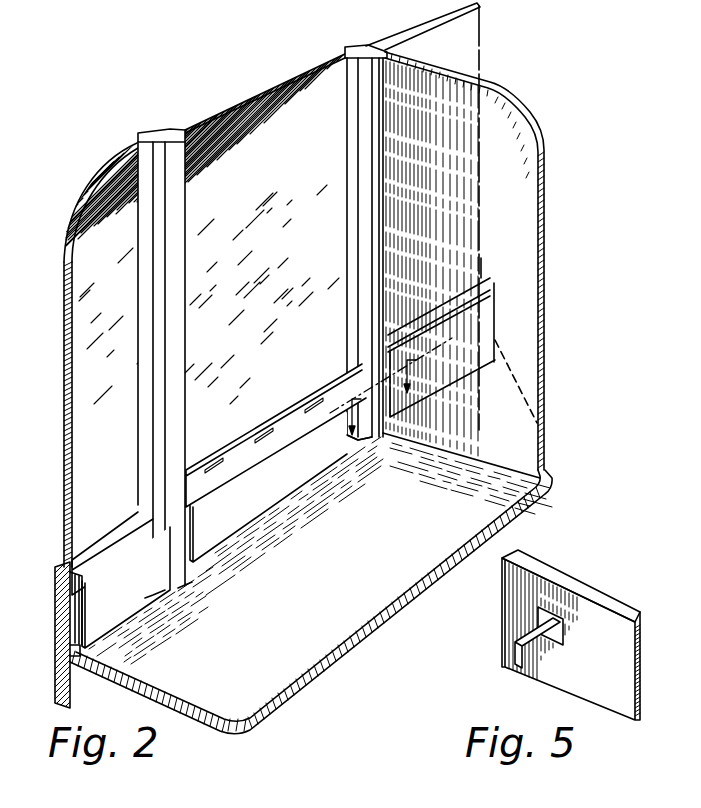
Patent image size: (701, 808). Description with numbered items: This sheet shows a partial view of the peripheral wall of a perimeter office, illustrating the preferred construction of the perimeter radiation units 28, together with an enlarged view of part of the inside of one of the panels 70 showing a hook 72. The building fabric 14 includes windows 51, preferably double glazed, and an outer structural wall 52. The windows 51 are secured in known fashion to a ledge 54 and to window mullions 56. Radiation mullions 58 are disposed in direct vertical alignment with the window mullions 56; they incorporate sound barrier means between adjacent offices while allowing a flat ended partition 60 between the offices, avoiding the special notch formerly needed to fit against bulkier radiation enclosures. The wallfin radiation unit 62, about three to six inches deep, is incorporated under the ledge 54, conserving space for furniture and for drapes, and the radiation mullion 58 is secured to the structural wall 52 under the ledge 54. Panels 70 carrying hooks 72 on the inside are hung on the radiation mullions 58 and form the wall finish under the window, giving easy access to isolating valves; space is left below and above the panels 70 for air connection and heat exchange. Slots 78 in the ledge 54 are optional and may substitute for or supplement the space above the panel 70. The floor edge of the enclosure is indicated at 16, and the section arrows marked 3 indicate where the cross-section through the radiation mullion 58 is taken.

In FIG. 2, the fabric 14 is at (64, 341).
In FIG. 2, the windows 51 is at (100, 189).
In FIG. 2, the window mullions 56 is at (170, 131).
In FIG. 2, the ledge 54 is at (315, 401).
In FIG. 2, the slots 78 is at (228, 460).
In FIG. 2, the radiation mullions 58 is at (378, 439).
In FIG. 2, the flat ended partition 60 is at (538, 240).
In FIG. 2, the outer structural wall 52 is at (56, 597).
In FIG. 2, the wallfin radiation unit 62 is at (70, 655).
In FIG. 2, the perimeter radiation units 28 is at (337, 597).
In FIG. 2, the front bottom edge 16 is at (306, 695).
In FIG. 2, the section line 3- 3 is at (391, 387).
In FIG. 5, the panels 70 is at (585, 597).
In FIG. 5, the hooks 72 is at (535, 647).